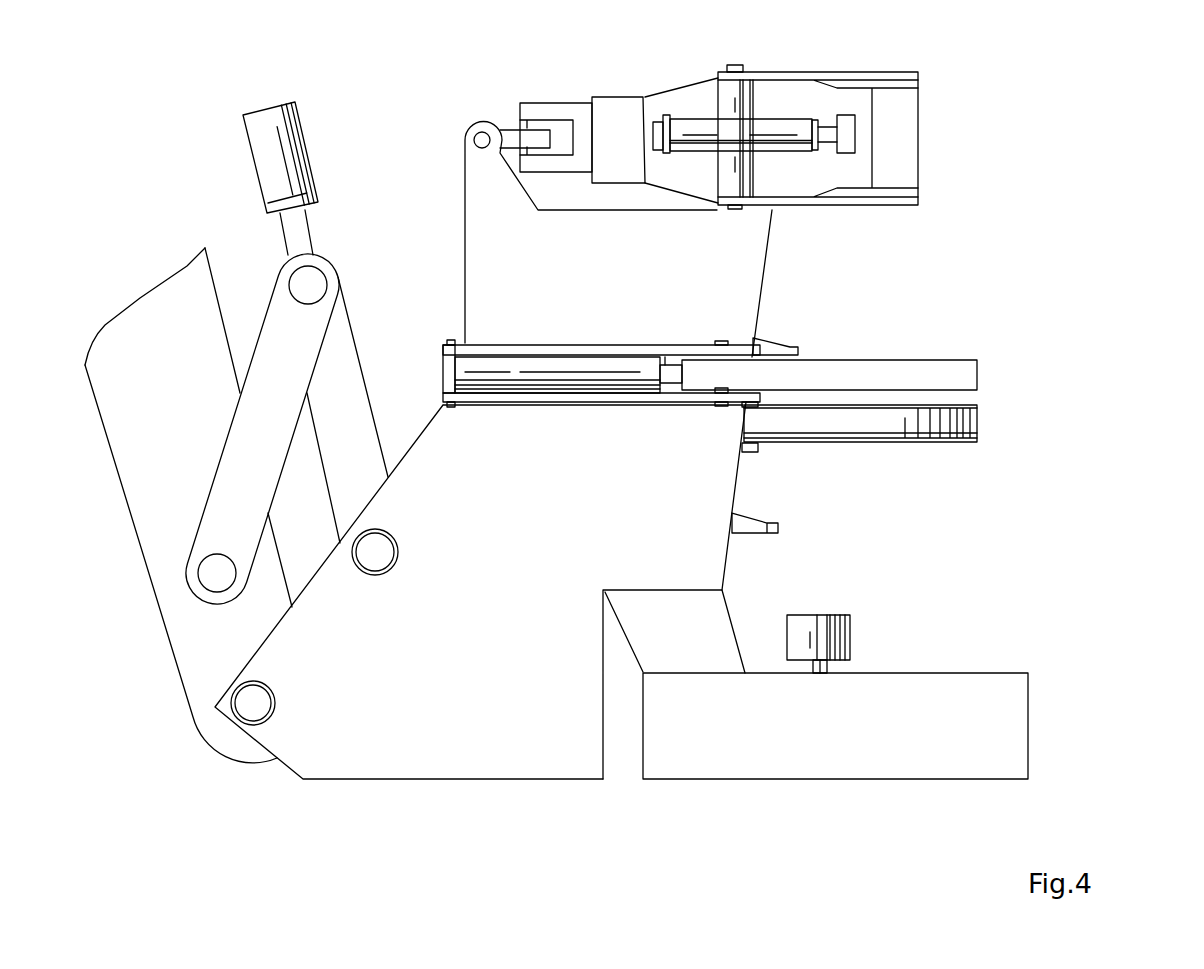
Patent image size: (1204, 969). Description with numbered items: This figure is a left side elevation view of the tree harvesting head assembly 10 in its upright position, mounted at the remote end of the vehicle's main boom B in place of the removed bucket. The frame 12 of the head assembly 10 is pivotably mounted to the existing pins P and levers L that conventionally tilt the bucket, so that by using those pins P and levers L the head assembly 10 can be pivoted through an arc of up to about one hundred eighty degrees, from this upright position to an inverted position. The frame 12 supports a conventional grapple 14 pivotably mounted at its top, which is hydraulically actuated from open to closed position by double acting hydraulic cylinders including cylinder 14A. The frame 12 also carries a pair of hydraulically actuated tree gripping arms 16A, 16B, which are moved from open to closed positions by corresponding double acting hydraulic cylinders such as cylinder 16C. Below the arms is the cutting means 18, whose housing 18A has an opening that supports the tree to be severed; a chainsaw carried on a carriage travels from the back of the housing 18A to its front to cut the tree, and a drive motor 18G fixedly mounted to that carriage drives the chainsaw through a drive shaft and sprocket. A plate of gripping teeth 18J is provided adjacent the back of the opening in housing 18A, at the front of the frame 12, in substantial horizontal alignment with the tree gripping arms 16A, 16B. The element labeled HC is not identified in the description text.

The tree harvesting head assembly 10 is at (1071, 352).
The frame 12 is at (572, 494).
The grapple 14 is at (966, 132).
The double acting hydraulic cylinder 14A is at (697, 125).
The tree gripping arm 16A is at (915, 370).
The tree gripping arm 16B is at (977, 420).
The double acting hydraulic cylinder 16C is at (518, 363).
The cutting means 18 is at (815, 714).
The housing 18A is at (850, 748).
The drive motor 18G is at (828, 615).
The plate of gripping teeth 18J is at (793, 343).
The main boom B is at (177, 377).
The handle HC is at (298, 153).
The levers L is at (272, 438).
The pins P is at (318, 282).